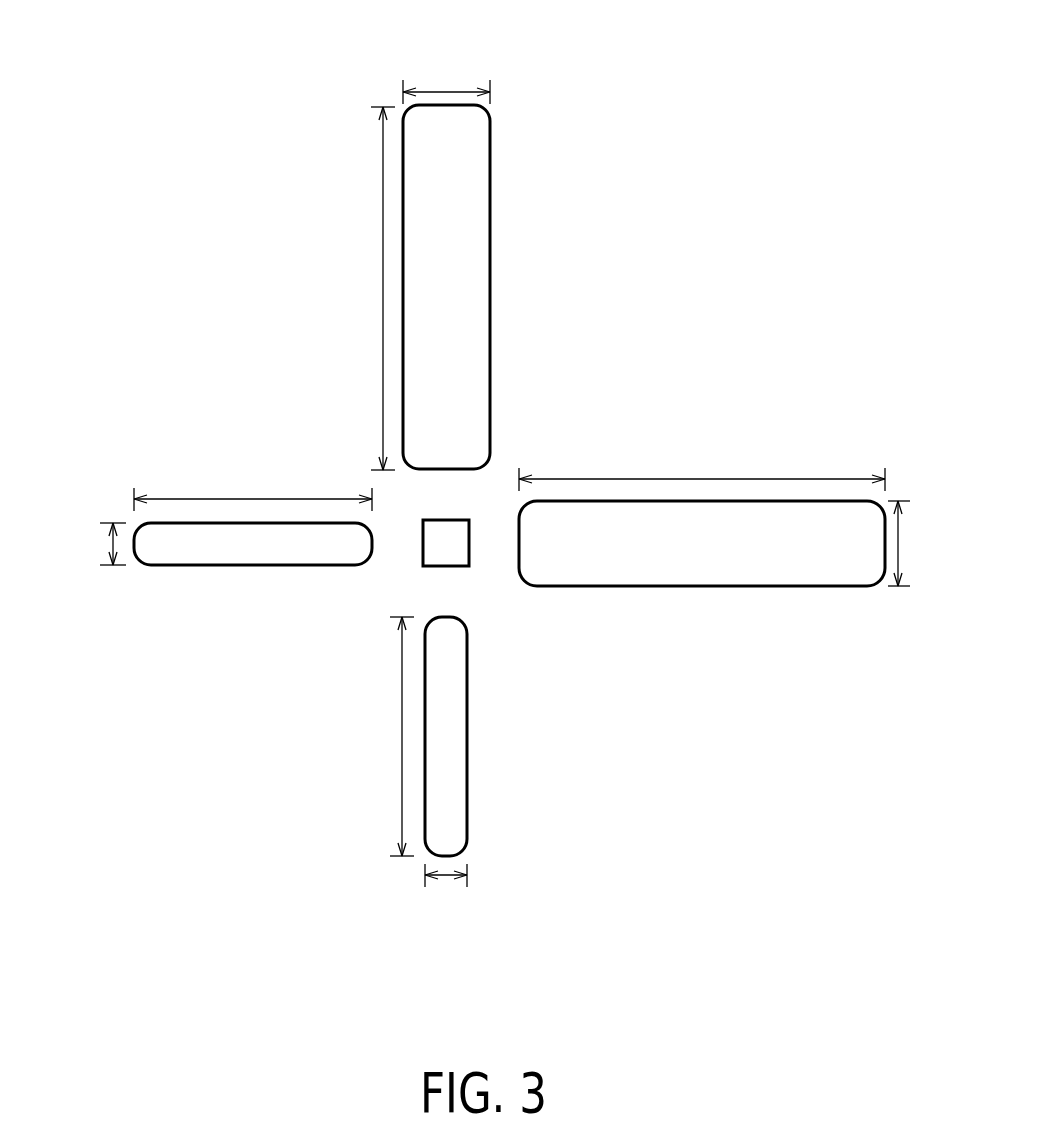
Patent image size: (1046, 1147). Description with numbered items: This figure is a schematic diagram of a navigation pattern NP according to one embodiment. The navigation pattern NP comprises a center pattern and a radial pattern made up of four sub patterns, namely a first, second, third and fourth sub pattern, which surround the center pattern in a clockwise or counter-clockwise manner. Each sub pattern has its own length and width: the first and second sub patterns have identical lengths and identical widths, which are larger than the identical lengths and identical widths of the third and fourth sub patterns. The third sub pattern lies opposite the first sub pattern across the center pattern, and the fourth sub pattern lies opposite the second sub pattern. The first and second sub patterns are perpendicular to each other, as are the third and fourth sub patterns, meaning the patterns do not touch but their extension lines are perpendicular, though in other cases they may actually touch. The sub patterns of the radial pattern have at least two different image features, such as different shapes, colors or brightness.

The navigation pattern NP is at (661, 85).